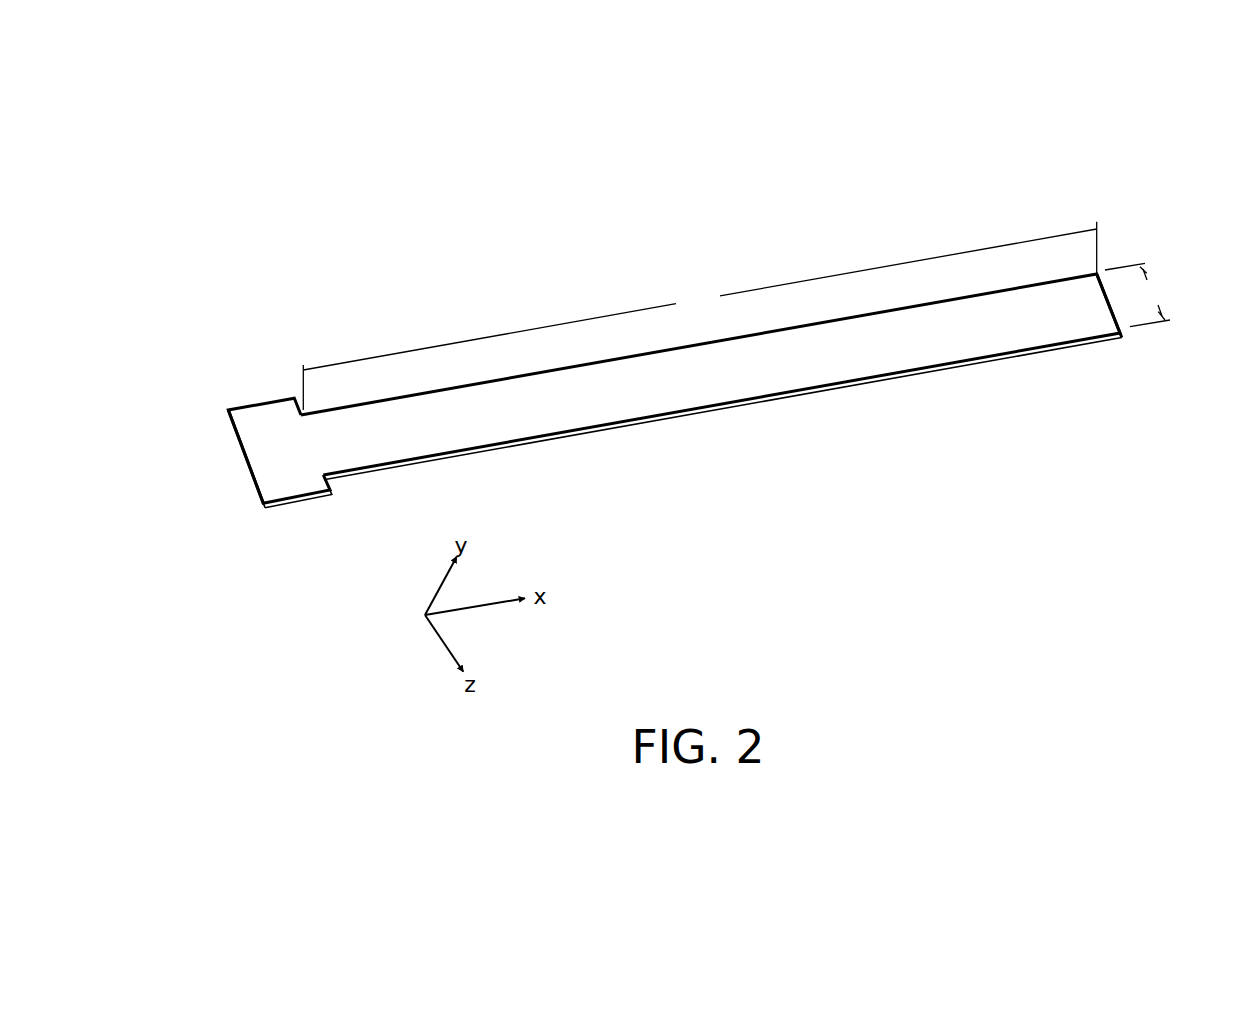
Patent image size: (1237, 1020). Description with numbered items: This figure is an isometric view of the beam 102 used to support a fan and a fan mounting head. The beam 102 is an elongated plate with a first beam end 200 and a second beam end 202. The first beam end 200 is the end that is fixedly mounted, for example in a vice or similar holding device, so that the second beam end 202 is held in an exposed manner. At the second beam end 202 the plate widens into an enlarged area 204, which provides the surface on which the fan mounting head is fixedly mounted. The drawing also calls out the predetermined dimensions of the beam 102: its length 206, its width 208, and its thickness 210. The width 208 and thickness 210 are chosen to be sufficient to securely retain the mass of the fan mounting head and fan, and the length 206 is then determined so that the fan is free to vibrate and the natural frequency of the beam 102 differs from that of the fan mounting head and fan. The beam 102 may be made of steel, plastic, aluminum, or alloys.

The beam 102 is at (703, 328).
The first beam end 200 is at (1102, 297).
The second beam end 202 is at (247, 470).
The enlarged area 204 is at (270, 422).
The length 206 is at (699, 316).
The width 208 is at (1140, 294).
The thickness 210 is at (1122, 335).